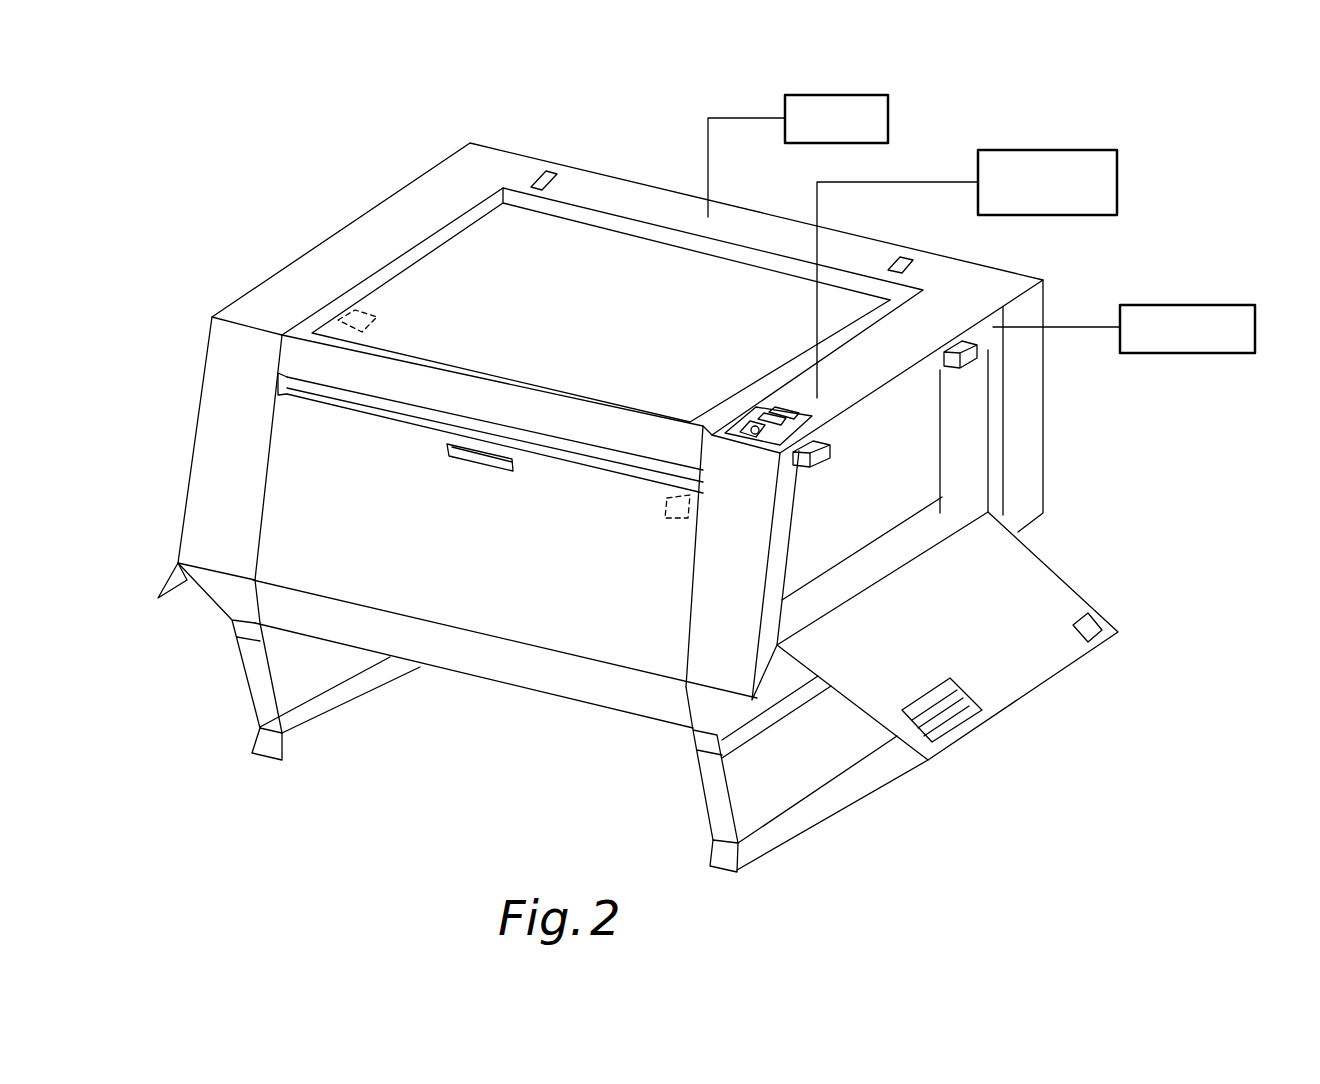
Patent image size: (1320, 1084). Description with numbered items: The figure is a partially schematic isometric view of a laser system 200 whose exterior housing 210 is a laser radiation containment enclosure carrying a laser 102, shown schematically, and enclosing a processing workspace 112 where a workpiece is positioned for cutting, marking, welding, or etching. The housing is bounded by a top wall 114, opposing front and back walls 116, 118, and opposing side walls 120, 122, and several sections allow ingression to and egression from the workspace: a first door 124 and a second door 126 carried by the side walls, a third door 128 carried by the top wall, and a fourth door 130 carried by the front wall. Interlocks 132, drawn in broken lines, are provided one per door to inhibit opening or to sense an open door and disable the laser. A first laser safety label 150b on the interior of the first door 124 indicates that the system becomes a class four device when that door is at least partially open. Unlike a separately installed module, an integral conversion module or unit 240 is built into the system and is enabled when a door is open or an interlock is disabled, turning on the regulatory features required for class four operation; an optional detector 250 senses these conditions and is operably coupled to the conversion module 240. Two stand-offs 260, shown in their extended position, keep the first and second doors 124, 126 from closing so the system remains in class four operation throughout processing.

The laser 102 is at (860, 95).
The processing workspace 112 is at (893, 472).
The top wall 114 is at (747, 259).
The front wall 116 is at (479, 652).
The back wall 118 is at (1047, 302).
The side wall 120 is at (993, 473).
The side wall 122 is at (209, 329).
The first door 124 is at (1033, 668).
The second door 126 is at (176, 583).
The third door 128 is at (848, 297).
The fourth door 130 is at (623, 642).
The interlock 132 is at (373, 317).
The first laser safety label 150b is at (975, 698).
The laser system 200 is at (1018, 126).
The exterior housing 210 is at (978, 277).
The conversion module 240 is at (1081, 150).
The detector 250 is at (1204, 302).
The stand-off 260 is at (976, 363).